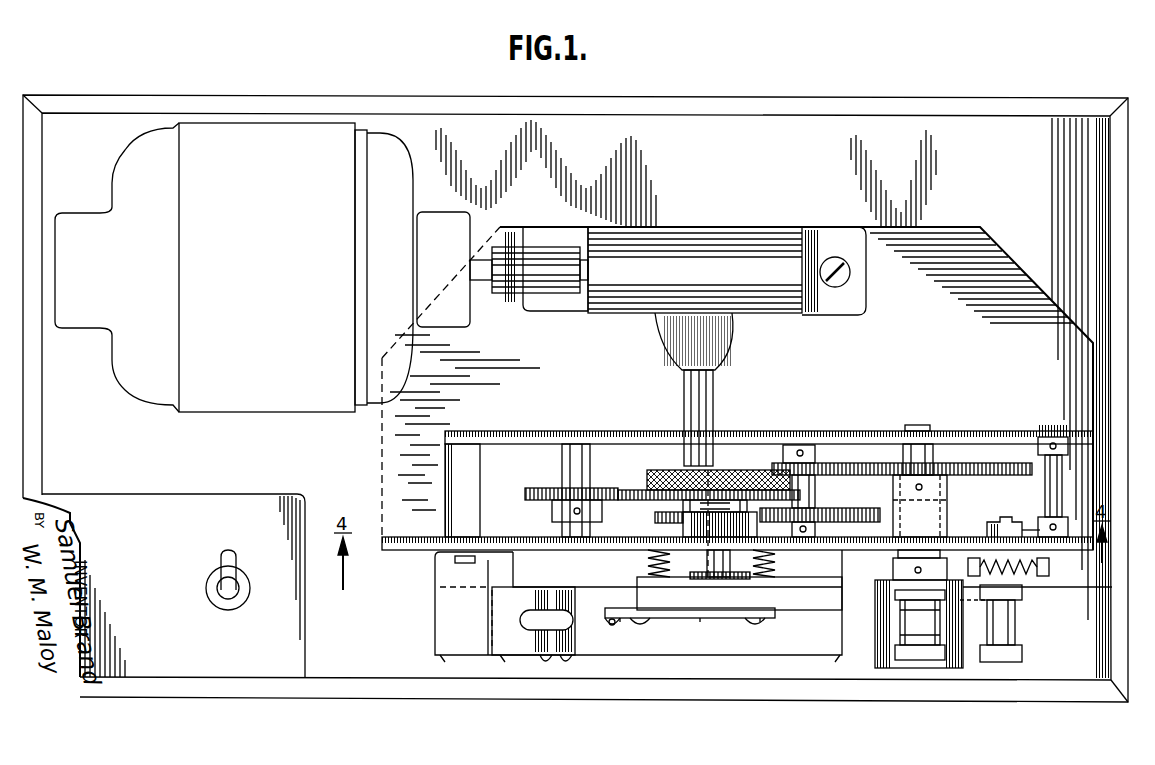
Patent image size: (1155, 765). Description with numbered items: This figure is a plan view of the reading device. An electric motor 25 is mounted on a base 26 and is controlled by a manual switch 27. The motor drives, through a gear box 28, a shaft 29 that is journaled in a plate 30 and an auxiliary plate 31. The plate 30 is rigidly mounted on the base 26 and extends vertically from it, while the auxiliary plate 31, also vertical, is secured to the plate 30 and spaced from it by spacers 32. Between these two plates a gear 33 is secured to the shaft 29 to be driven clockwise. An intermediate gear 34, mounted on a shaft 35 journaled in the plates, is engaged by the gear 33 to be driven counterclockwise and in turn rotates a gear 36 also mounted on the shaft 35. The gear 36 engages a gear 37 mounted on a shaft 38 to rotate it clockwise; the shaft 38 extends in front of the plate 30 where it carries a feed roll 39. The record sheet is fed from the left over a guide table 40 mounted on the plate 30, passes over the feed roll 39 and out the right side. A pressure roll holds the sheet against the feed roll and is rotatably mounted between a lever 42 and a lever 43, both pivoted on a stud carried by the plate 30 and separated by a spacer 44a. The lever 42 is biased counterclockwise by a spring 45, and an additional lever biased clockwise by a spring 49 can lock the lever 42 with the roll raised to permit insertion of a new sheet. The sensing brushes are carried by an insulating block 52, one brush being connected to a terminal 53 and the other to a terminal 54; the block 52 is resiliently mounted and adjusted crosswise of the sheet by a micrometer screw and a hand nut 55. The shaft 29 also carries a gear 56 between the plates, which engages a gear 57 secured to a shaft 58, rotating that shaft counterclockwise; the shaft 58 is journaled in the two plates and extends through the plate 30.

The electric motor 25 is at (262, 267).
The base 26 is at (98, 96).
The manual switch 27 is at (220, 557).
The gear box 28 is at (693, 228).
The shaft 29 is at (714, 406).
The plate 30 is at (394, 537).
The auxiliary plate 31 is at (533, 432).
The spacers 32 is at (442, 491).
The gear 33 is at (657, 513).
The intermediate gear 34 is at (856, 520).
The shaft 35 is at (810, 500).
The gear 36 is at (780, 462).
The gear 37 is at (966, 462).
The shaft 38 is at (931, 456).
The feed roll 39 is at (888, 668).
The guide table 40 is at (843, 578).
The lever 42 is at (985, 600).
The lever 43 is at (975, 668).
The spacer 44a is at (1020, 616).
The spring 45 is at (1049, 572).
The spring 49 is at (1006, 518).
The insulating block 52 is at (790, 583).
The terminal 53 is at (614, 626).
The terminal 54 is at (800, 625).
The hand nut 55 is at (655, 470).
The gear 56 is at (636, 488).
The gear 57 is at (540, 488).
The shaft 58 is at (560, 530).